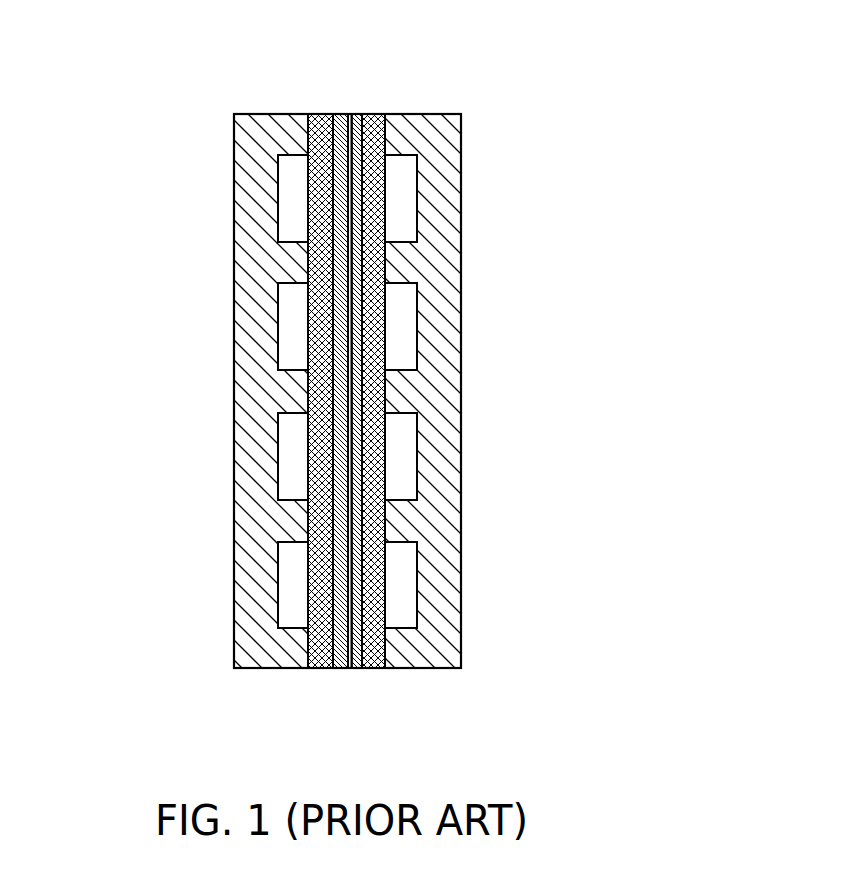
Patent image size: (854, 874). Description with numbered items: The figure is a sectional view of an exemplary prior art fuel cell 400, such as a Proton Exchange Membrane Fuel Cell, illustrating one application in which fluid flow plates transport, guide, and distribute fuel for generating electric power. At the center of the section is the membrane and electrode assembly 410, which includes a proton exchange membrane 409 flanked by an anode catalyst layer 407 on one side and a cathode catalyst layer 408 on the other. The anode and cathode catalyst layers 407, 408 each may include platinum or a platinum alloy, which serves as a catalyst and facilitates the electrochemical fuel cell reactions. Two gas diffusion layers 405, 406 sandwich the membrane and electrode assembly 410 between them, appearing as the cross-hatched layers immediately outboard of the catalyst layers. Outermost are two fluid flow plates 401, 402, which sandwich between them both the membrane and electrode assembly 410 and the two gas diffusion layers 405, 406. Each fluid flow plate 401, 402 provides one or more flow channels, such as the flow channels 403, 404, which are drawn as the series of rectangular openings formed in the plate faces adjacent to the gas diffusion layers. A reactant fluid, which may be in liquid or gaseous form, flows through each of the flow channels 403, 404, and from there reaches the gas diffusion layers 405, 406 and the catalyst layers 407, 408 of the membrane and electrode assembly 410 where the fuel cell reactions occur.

The fuel cell 400 is at (520, 87).
The fluid flow plate 401 is at (463, 173).
The fluid flow plate 402 is at (233, 173).
The flow channel 403 is at (406, 337).
The flow channel 404 is at (290, 337).
The gas diffusion layer 405 is at (372, 670).
The gas diffusion layer 406 is at (320, 670).
The anode catalyst layer 407 is at (357, 112).
The cathode catalyst layer 408 is at (338, 112).
The proton exchange membrane 409 is at (349, 112).
The membrane and electrode assembly 410 is at (349, 388).